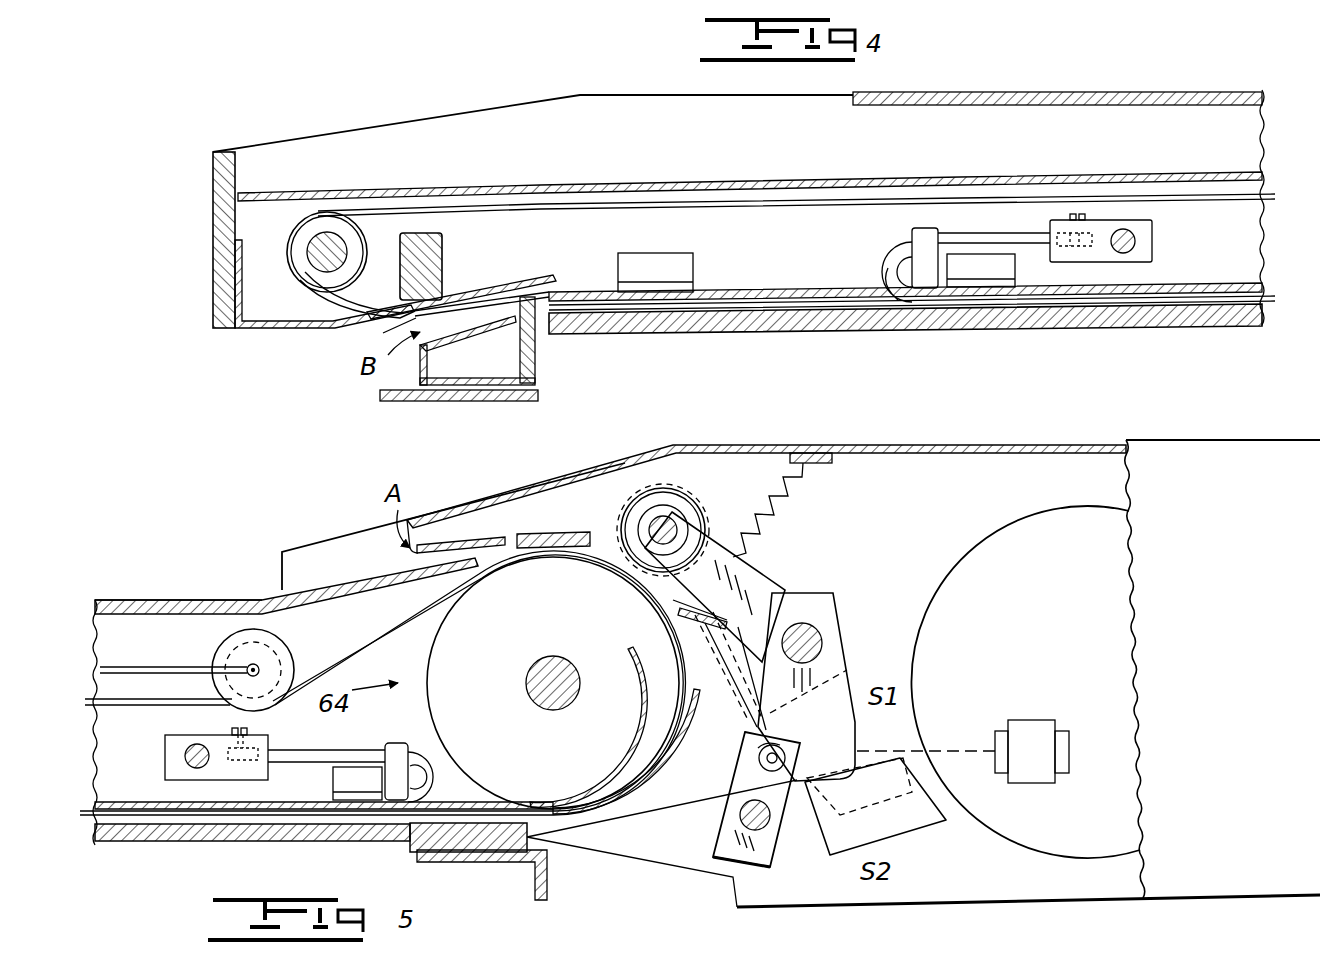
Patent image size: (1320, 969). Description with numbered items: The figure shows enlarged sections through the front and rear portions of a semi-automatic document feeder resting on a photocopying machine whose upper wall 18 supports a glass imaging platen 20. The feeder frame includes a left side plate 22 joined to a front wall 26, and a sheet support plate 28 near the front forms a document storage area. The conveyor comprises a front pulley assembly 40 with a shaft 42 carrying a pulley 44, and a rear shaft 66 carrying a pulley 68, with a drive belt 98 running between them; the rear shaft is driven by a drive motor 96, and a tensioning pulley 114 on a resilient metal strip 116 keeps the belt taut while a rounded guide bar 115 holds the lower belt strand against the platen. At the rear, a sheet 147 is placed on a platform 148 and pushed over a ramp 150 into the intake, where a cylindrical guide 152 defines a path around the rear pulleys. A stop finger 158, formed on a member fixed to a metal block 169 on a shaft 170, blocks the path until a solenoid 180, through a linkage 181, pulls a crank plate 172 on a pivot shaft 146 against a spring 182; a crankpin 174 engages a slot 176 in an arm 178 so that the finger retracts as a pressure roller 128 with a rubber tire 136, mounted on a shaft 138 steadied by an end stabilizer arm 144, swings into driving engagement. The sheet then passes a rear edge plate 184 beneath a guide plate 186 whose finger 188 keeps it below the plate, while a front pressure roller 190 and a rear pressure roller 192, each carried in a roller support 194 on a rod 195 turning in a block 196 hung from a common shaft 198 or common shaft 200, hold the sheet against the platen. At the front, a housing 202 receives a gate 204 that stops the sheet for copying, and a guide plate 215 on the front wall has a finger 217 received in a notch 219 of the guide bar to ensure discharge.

In FIG. 4, the upper wall 18 is at (390, 402).
In FIG. 5, the upper wall 18 is at (500, 864).
In FIG. 4, the glass imaging platen 20 is at (665, 334).
In FIG. 5, the glass imaging platen 20 is at (345, 841).
In FIG. 4, the left side plate 22 is at (463, 108).
In FIG. 4, the front wall 26 is at (213, 262).
In FIG. 4, the sheet support plate 28 is at (330, 195).
In FIG. 4, the front pulley assembly 40 is at (292, 222).
In FIG. 4, the shaft 42 is at (305, 272).
In FIG. 4, the pulley 44 is at (362, 240).
In FIG. 5, the shaft 66 is at (542, 660).
In FIG. 5, the pulley 68 is at (420, 652).
In FIG. 5, the drive motor 96 is at (975, 825).
In FIG. 4, the drive belt 98 is at (570, 190).
In FIG. 5, the drive belt 98 is at (152, 706).
In FIG. 5, the tensioning pulley 114 is at (290, 652).
In FIG. 4, the guide bar 115 is at (443, 263).
In FIG. 5, the resilient metal strip 116 is at (168, 670).
In FIG. 5, the pressure roller 128 is at (657, 493).
In FIG. 5, the rubber tire 136 is at (682, 487).
In FIG. 5, the shaft 138 is at (693, 508).
In FIG. 5, the end stabilizer arm 144 is at (770, 575).
In FIG. 5, the pivot shaft 146 is at (823, 640).
In FIG. 5, the sheet 147 is at (315, 585).
In FIG. 4, the platform 148 is at (883, 108).
In FIG. 5, the platform 148 is at (150, 602).
In FIG. 5, the ramp 150 is at (233, 610).
In FIG. 5, the cylindrical guide 152 is at (627, 823).
In FIG. 5, the finger 158 is at (670, 620).
In FIG. 5, the metal block 169 is at (715, 822).
In FIG. 5, the shaft 170 is at (808, 820).
In FIG. 5, the crank plate 172 is at (832, 592).
In FIG. 5, the crankpin 174 is at (771, 669).
In FIG. 5, the slot 176 is at (760, 748).
In FIG. 5, the arm 178 is at (713, 868).
In FIG. 5, the solenoid 180 is at (1033, 720).
In FIG. 5, the linkage 181 is at (935, 752).
In FIG. 5, the spring 182 is at (795, 505).
In FIG. 5, the rear edge plate 184 is at (453, 846).
In FIG. 4, the guide plate 186 is at (758, 300).
In FIG. 5, the guide plate 186 is at (300, 810).
In FIG. 5, the finger 188 is at (633, 697).
In FIG. 4, the front pressure roller 190 is at (878, 290).
In FIG. 5, the rear pressure roller 192 is at (443, 767).
In FIG. 4, the roller support 194 is at (925, 228).
In FIG. 5, the roller support 194 is at (448, 784).
In FIG. 4, the rod 195 is at (1000, 233).
In FIG. 5, the rod 195 is at (340, 752).
In FIG. 4, the block 196 is at (1105, 220).
In FIG. 5, the block 196 is at (225, 782).
In FIG. 4, the common shaft 198 is at (1152, 246).
In FIG. 5, the common shaft 200 is at (195, 770).
In FIG. 4, the housing 202 is at (473, 373).
In FIG. 4, the gate 204 is at (537, 358).
In FIG. 4, the guide plate 215 is at (315, 315).
In FIG. 4, the finger 217 is at (540, 282).
In FIG. 4, the notch 219 is at (405, 323).